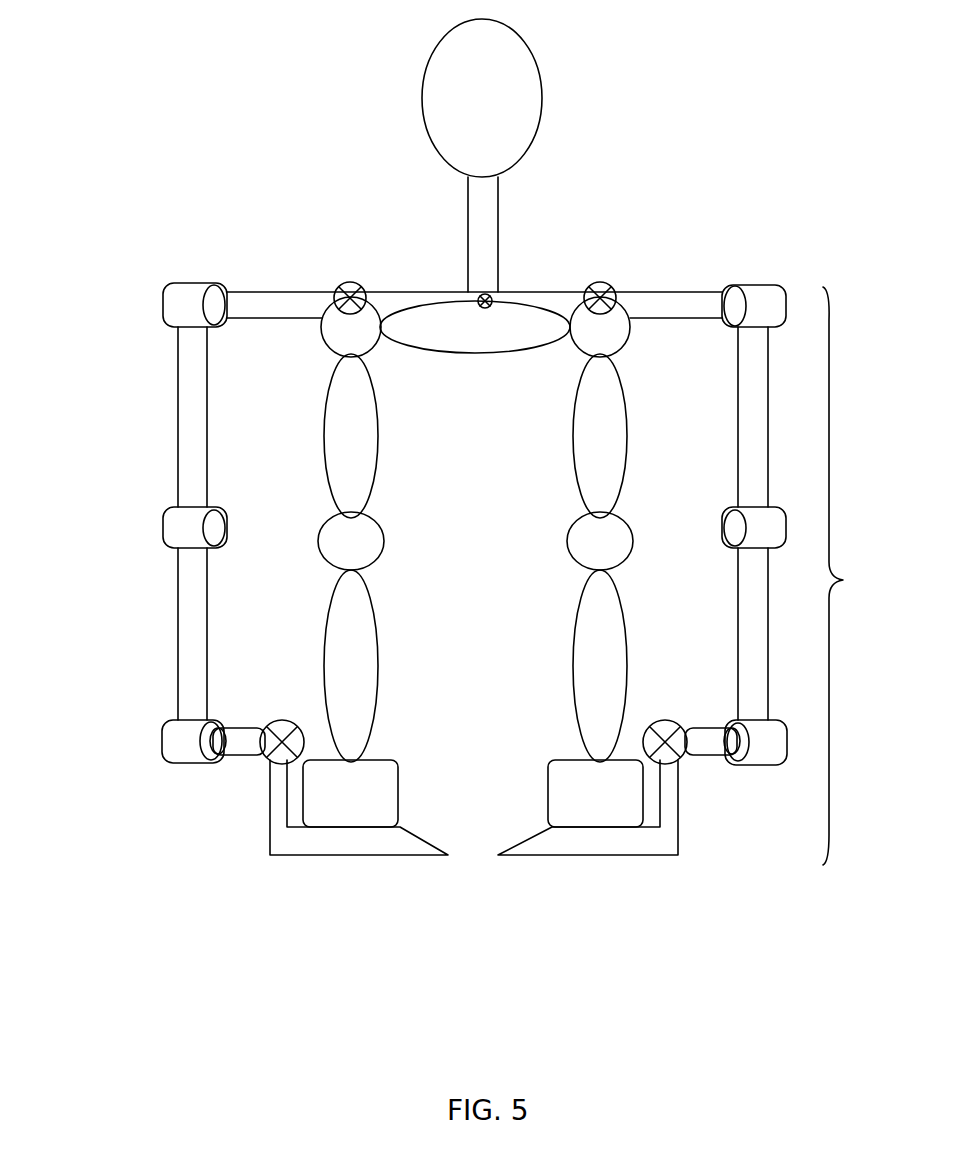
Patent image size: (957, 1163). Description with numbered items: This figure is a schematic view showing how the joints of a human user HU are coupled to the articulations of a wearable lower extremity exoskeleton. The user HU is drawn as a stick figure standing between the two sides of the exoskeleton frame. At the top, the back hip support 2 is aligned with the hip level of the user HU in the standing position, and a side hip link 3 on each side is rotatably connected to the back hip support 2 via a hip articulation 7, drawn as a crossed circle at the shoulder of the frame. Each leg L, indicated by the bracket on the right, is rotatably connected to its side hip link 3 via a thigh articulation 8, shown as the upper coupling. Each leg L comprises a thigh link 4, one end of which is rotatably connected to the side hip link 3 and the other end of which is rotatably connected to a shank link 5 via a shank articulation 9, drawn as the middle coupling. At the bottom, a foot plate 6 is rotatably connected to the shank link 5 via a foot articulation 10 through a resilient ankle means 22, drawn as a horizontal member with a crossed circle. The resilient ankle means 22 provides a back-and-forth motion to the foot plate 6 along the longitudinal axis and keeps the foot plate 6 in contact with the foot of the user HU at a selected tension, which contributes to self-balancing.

The human user HU is at (542, 292).
The back hip support 2 is at (410, 290).
The side hip link 3 is at (268, 290).
The hip articulation 7 is at (345, 290).
The thigh articulation 8 is at (163, 305).
The thigh link 4 is at (178, 403).
The shank articulation 9 is at (163, 528).
The shank link 5 is at (178, 623).
The foot articulation 10 is at (162, 741).
The resilient ankle means 22 is at (258, 742).
The foot plate 6 is at (270, 852).
The leg L is at (842, 576).